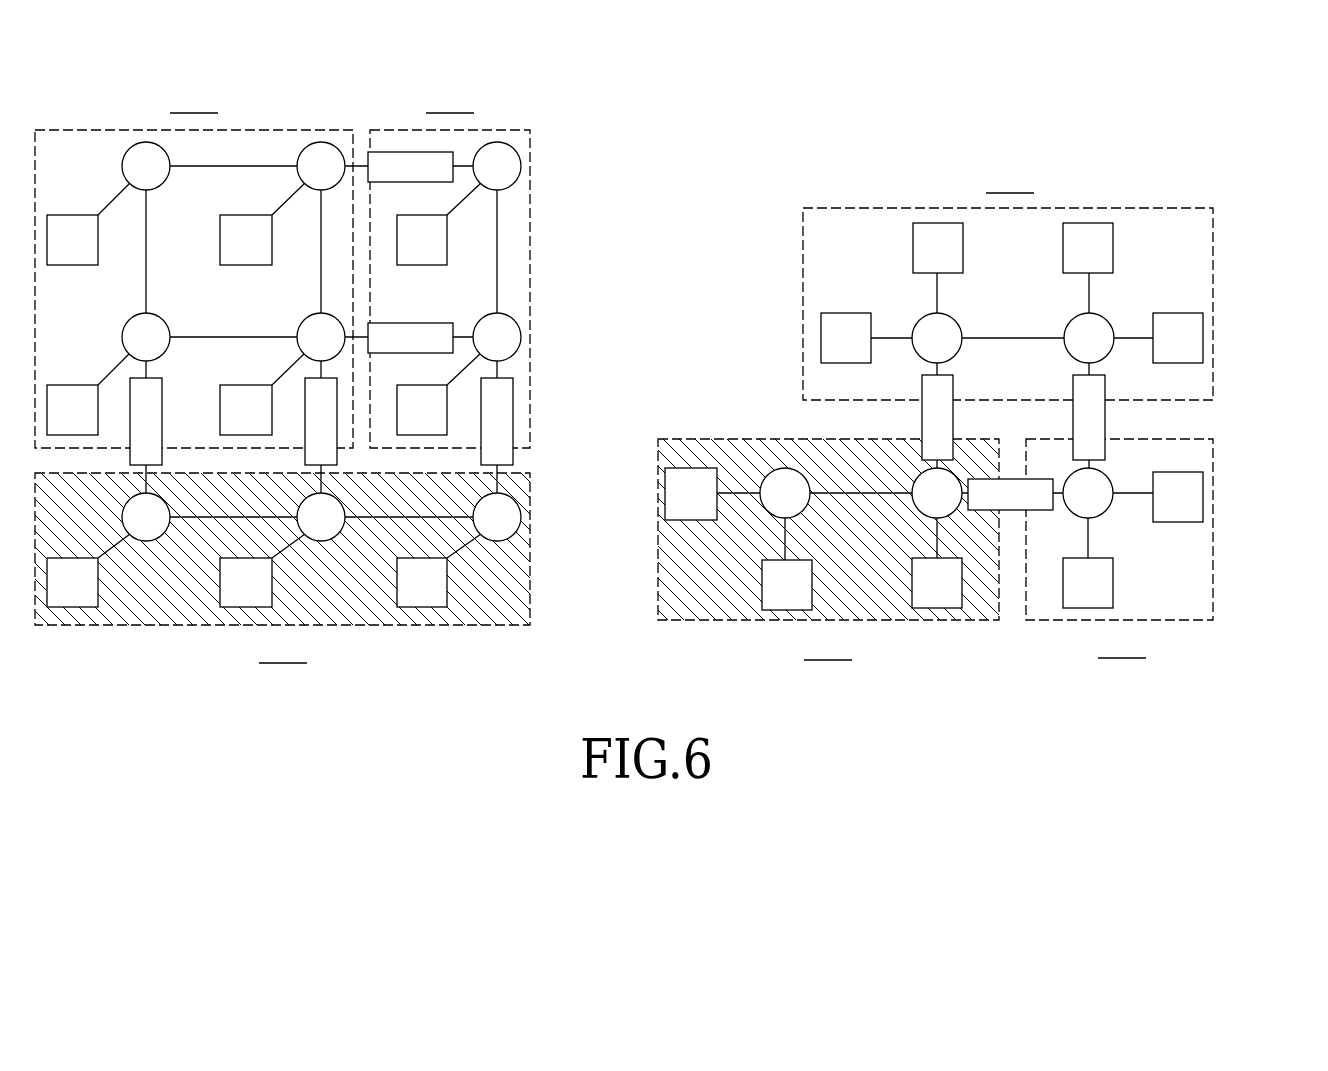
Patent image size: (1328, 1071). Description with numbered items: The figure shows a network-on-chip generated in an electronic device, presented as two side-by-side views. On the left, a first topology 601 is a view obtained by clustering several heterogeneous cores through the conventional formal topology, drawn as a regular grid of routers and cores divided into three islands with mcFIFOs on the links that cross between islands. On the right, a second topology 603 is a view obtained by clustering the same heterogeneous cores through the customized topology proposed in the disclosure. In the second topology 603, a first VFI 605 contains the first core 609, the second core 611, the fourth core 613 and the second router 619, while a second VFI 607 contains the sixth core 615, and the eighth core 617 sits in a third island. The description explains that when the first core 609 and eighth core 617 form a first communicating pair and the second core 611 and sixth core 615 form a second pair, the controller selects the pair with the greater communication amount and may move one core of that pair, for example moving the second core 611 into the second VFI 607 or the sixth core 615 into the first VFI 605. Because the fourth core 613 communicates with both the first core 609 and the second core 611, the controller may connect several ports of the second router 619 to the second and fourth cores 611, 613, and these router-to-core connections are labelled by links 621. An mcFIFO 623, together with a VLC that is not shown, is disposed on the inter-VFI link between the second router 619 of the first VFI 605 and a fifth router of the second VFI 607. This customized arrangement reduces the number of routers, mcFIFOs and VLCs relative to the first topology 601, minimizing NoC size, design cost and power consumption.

The first topology 601 is at (330, 72).
The second topology 603 is at (918, 162).
The first VFI 605 is at (850, 208).
The second VFI 607 is at (1213, 575).
The first core 609 is at (963, 247).
The second core 611 is at (1113, 248).
The fourth core 613 is at (1185, 313).
The sixth core 615 is at (1190, 472).
The eighth core 617 is at (942, 608).
The second router 619 is at (1106, 316).
The links between routers and cores 621 is at (1140, 338).
The mcFIFO 623 is at (1105, 425).